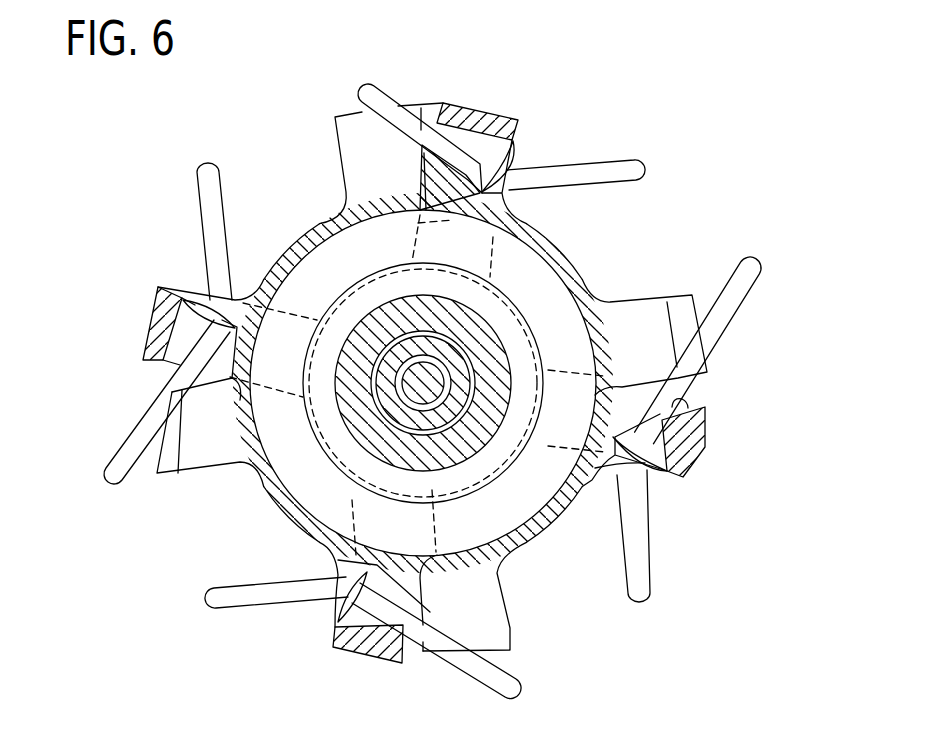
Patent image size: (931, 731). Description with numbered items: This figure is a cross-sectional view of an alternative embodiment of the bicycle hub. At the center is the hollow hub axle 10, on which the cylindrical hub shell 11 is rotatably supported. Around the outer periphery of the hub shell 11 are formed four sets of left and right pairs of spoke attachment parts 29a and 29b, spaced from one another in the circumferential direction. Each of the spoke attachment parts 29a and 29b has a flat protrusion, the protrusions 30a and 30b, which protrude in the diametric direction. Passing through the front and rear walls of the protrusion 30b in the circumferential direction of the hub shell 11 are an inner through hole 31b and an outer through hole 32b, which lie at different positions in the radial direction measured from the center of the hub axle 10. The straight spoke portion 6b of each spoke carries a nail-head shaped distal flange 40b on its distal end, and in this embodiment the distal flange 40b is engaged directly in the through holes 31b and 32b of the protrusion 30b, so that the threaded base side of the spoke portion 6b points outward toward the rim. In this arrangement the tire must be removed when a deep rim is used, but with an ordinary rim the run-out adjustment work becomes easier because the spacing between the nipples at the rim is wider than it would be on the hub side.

The spoke portion 6b is at (418, 110).
The hub axle 10 is at (448, 382).
The hub shell 11 is at (582, 240).
The spoke attachment part 29a is at (349, 102).
The spoke attachment part 29b is at (503, 102).
The protrusion 30a is at (356, 132).
The protrusion 30b is at (520, 133).
The inner through hole 31b is at (515, 200).
The outer through hole 32b is at (688, 400).
The distal flange 40b is at (648, 472).